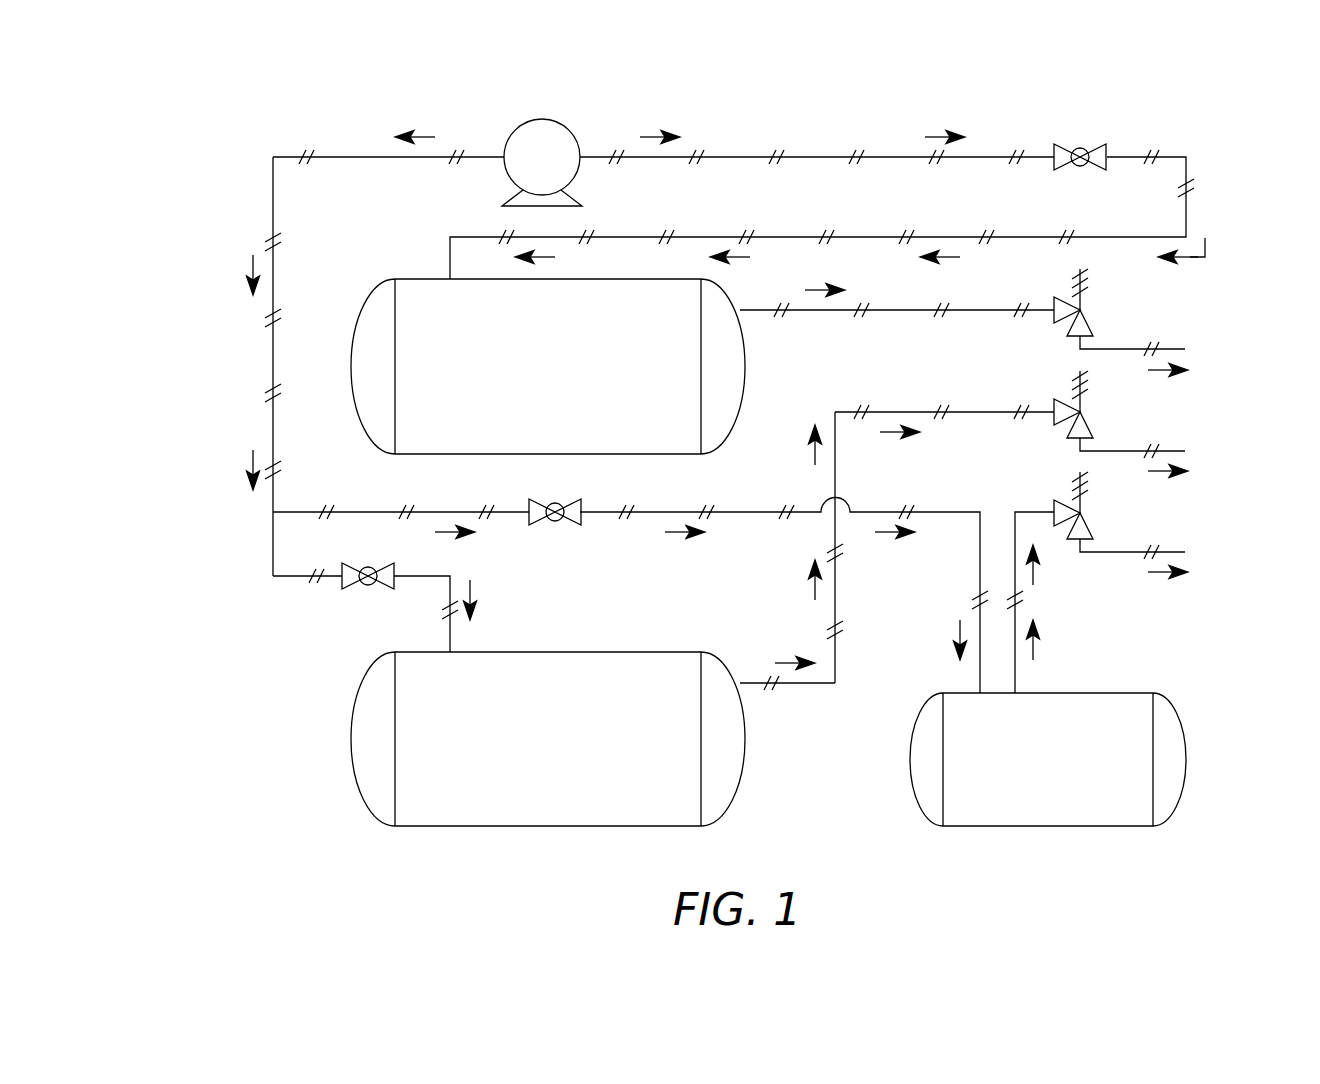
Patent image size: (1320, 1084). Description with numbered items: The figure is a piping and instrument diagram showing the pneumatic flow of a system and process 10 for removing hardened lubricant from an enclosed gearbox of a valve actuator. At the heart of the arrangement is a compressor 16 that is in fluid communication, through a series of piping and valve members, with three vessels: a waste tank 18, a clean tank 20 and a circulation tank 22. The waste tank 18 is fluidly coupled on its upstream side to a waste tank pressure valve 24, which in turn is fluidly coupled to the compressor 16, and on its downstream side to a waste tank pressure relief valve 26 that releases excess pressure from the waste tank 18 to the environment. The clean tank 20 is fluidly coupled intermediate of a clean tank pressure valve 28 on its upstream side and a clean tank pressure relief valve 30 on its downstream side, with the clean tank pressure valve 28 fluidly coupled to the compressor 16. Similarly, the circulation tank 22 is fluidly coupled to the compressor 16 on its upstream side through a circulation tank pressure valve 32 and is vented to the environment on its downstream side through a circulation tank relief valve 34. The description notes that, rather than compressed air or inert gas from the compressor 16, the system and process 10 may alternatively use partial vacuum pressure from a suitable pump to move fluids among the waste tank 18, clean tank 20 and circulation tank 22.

The system and process 10 is at (206, 153).
The compressor 16 is at (522, 166).
The waste tank 18 is at (528, 338).
The clean tank 20 is at (528, 710).
The circulation tank 22 is at (1028, 752).
The waste tank pressure valve 24 is at (1082, 146).
The waste tank pressure relief valve 26 is at (1093, 323).
The clean tank pressure valve 28 is at (365, 590).
The clean tank pressure relief valve 30 is at (1093, 425).
The circulation tank pressure valve 32 is at (552, 525).
The circulation tank relief valve 34 is at (1093, 526).